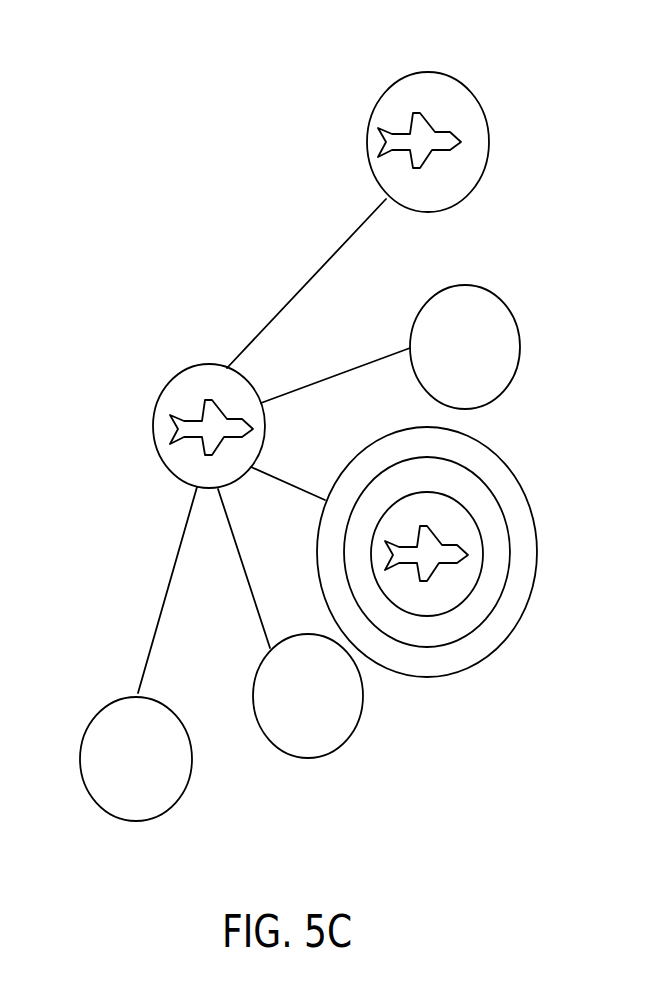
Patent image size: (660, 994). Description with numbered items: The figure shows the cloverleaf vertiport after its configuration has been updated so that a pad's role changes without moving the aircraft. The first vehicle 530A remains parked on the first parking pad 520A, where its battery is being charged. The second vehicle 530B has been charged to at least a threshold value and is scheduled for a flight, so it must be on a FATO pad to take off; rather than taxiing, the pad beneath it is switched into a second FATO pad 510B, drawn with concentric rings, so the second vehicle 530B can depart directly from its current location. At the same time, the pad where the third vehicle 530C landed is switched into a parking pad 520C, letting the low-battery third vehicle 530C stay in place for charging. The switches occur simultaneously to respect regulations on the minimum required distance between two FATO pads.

The second FATO pad 510B is at (505, 462).
The first parking pad 520A is at (473, 83).
The parking pad 520C is at (170, 381).
The first vehicle 530A is at (455, 137).
The second vehicle 530B is at (460, 560).
The third vehicle 530C is at (197, 437).